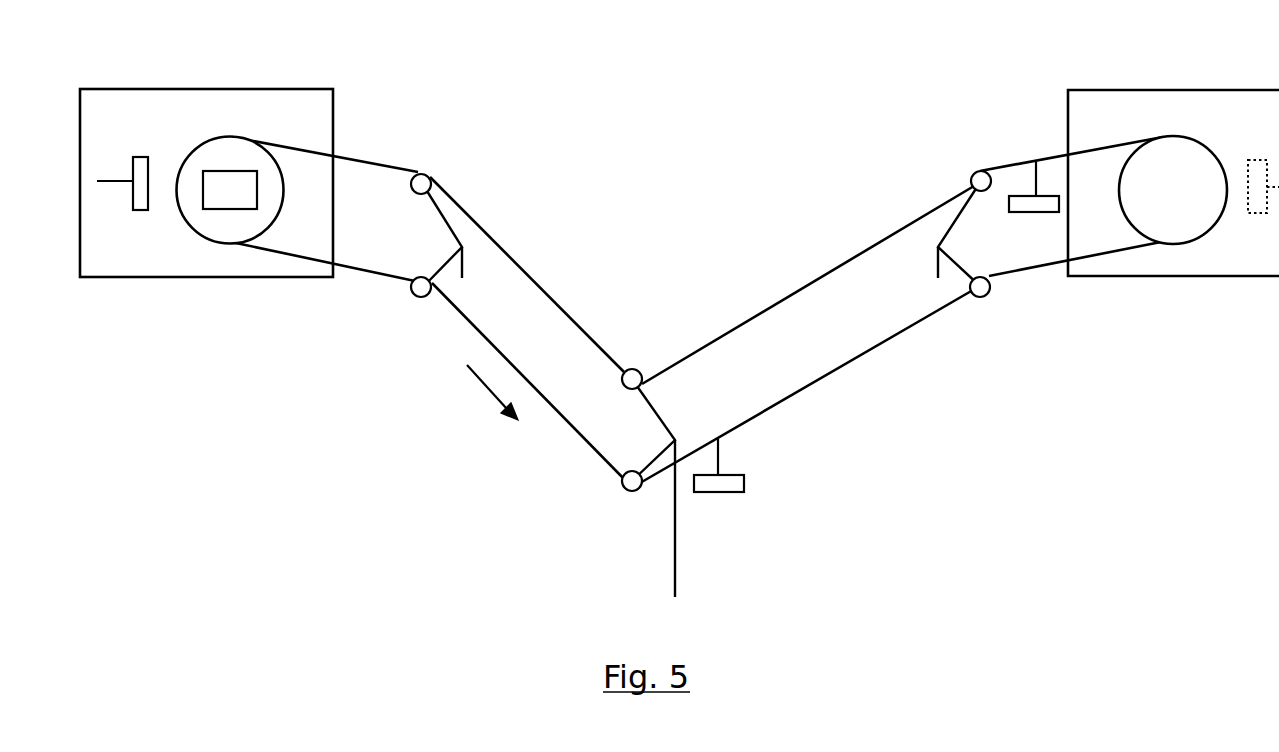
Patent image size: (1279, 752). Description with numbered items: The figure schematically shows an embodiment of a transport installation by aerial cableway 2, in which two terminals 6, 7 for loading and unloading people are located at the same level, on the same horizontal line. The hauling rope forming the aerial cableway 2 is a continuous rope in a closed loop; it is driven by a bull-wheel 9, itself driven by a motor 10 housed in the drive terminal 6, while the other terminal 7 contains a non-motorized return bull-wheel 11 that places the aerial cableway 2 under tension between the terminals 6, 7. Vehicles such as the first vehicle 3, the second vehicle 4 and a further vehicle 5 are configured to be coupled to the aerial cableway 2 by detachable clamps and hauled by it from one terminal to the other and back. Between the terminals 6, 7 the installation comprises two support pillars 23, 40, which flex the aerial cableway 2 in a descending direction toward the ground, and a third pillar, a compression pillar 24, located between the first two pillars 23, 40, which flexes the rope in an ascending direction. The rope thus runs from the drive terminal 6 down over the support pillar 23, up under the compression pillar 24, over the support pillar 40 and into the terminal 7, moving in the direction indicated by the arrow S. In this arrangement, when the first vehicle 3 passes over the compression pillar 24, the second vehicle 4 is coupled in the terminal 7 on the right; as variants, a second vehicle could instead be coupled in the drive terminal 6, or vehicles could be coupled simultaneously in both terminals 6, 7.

The aerial cableway 2 is at (550, 422).
The first vehicle 3 is at (744, 484).
The second vehicle 4 is at (1023, 196).
The vehicle 5 is at (140, 157).
The drive terminal 6 is at (182, 89).
The terminal 7 is at (1219, 90).
The bull-wheel 9 is at (217, 218).
The motor 10 is at (230, 190).
The return bull-wheel 11 is at (1177, 217).
The support pillar 23 is at (463, 262).
The compression pillar 24 is at (677, 521).
The support pillar 40 is at (938, 262).
The conveying direction S is at (482, 385).